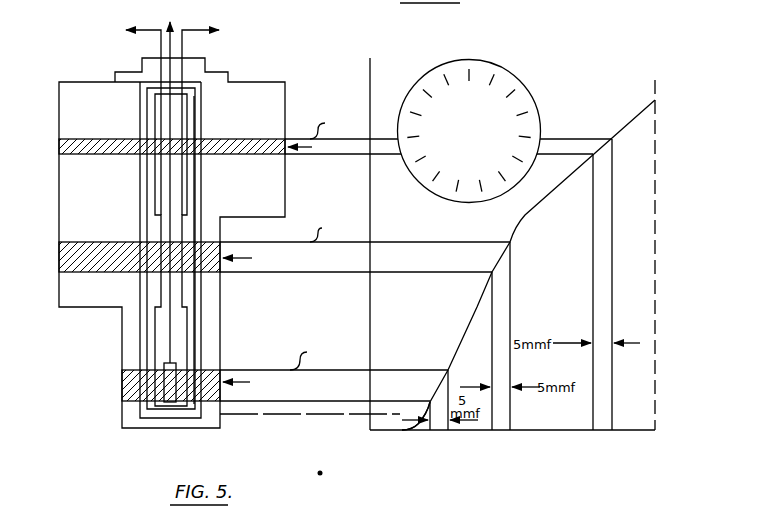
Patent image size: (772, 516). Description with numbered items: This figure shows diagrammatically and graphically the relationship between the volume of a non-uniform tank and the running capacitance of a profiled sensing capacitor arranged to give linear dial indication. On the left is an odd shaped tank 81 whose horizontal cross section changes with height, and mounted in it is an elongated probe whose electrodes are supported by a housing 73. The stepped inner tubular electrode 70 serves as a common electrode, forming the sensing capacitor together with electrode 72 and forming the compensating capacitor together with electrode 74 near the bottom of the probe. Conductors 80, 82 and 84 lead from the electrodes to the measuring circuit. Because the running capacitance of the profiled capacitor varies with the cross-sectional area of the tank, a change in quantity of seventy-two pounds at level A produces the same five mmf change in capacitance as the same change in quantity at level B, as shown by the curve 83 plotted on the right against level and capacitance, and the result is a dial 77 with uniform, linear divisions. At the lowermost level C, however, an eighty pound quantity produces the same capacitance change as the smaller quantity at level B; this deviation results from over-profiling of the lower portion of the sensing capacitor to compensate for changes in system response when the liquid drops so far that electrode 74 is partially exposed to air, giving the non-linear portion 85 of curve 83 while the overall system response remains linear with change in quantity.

The tubular electrode 70 is at (188, 178).
The electrode 72 is at (196, 205).
The housing 73 is at (200, 119).
The electrode 74 is at (177, 366).
The dial 77 is at (532, 100).
The conductor 80 is at (176, 26).
The odd shaped tank 81 is at (58, 108).
The conductor 82 is at (124, 34).
The line 83 is at (524, 216).
The conductor 84 is at (225, 30).
The portion of curve 85 is at (442, 374).